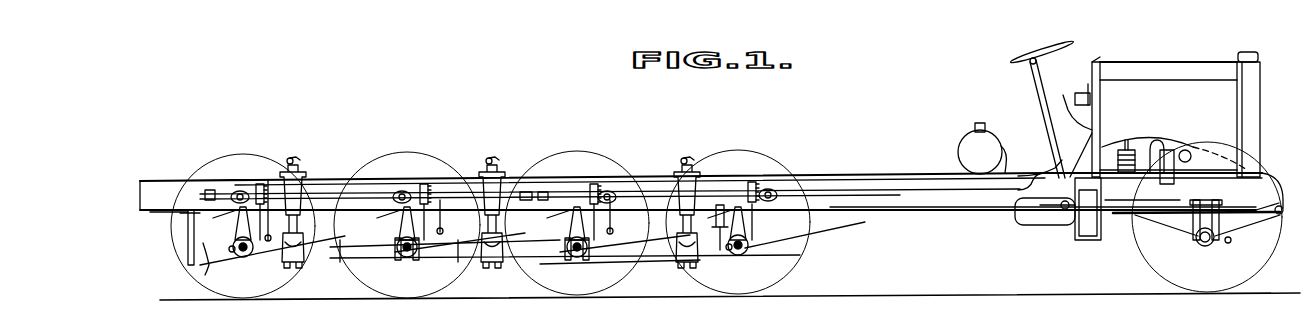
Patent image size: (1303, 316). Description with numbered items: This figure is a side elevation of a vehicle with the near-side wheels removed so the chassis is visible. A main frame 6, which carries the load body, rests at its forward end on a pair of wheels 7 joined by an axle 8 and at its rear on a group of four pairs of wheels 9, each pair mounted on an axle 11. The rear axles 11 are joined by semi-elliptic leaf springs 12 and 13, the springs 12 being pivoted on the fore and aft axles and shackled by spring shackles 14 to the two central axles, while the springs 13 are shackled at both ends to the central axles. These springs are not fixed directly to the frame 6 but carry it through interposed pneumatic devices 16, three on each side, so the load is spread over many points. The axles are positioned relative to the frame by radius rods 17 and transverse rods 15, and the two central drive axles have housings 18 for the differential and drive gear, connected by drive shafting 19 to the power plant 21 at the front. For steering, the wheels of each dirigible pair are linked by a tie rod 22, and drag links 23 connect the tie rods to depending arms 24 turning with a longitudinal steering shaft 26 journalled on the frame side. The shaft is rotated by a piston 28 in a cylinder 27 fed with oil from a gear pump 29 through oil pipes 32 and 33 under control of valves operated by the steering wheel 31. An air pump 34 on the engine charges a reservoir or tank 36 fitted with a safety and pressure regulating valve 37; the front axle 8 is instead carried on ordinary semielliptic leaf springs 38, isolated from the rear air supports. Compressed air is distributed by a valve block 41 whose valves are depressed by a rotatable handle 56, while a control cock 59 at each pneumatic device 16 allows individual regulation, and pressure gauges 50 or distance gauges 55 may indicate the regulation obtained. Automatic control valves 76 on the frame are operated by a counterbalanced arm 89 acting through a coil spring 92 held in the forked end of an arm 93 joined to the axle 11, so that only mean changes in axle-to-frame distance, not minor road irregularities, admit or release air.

The main frame 6 is at (172, 186).
The wheels 7 is at (1140, 254).
The axle 8 is at (1200, 242).
The wheels 9 is at (610, 264).
The axle 11 is at (395, 240).
The semi-elliptic leaf springs 12 is at (565, 245).
The semi-elliptic leaf springs 13 is at (404, 251).
The spring shackles 14 is at (426, 240).
The transverse rods 15 is at (234, 216).
The pneumatic devices 16 is at (497, 180).
The radius rods 17 is at (628, 243).
The housings 18 is at (395, 248).
The drive shafting 19 is at (526, 200).
The power plant 21 is at (1156, 142).
The tie rod 22 is at (231, 251).
The drag links 23 is at (721, 250).
The depending arms 24 is at (722, 212).
The longitudinal steering shaft 26 is at (1004, 211).
The cylinder 27 is at (1076, 233).
The piston 28 is at (1076, 226).
The gear pump 29 is at (1186, 150).
The steering wheel 31 is at (1028, 60).
The oil pipe 32 is at (1070, 178).
The oil pipe 33 is at (1080, 176).
The air pump 34 is at (1128, 150).
The reservoir or tank 36 is at (982, 152).
The safety and pressure regulating valve 37 is at (974, 126).
The semielliptic leaf springs 38 is at (1243, 216).
The valve block 41 is at (1088, 95).
The pressure gauges 50 is at (686, 156).
The distance gauges 55 is at (189, 244).
The handle 56 is at (1068, 95).
The control cock 59 is at (492, 160).
The control valves 76 is at (238, 190).
The counterbalanced arm 89 is at (252, 195).
The coil spring 92 is at (260, 184).
The arm 93 is at (293, 172).